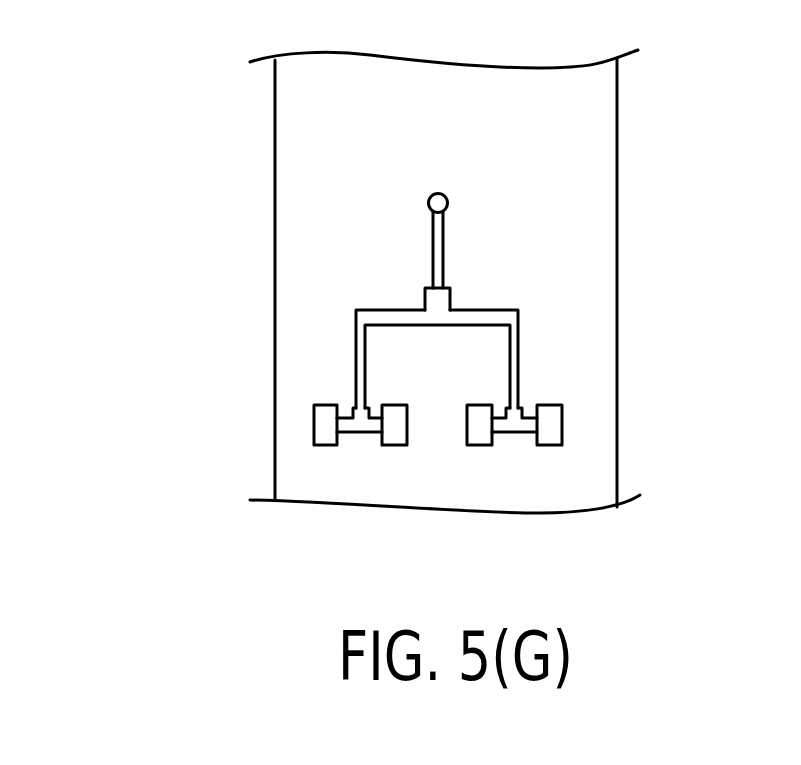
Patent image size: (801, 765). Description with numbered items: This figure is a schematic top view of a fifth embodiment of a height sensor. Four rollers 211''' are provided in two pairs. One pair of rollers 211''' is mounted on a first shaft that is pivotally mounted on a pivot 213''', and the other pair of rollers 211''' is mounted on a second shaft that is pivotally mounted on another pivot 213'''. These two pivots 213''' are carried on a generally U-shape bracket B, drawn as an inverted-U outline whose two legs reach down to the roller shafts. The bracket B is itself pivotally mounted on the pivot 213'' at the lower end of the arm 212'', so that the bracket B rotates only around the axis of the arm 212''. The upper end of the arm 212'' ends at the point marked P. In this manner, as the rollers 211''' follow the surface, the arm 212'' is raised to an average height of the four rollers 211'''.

The pivot point P is at (428, 204).
The arm 212'' is at (312, 234).
The pivot 213'' is at (320, 270).
The U-shape bracket B is at (488, 317).
The pivot 213''' is at (446, 382).
The rollers 211''' is at (474, 496).